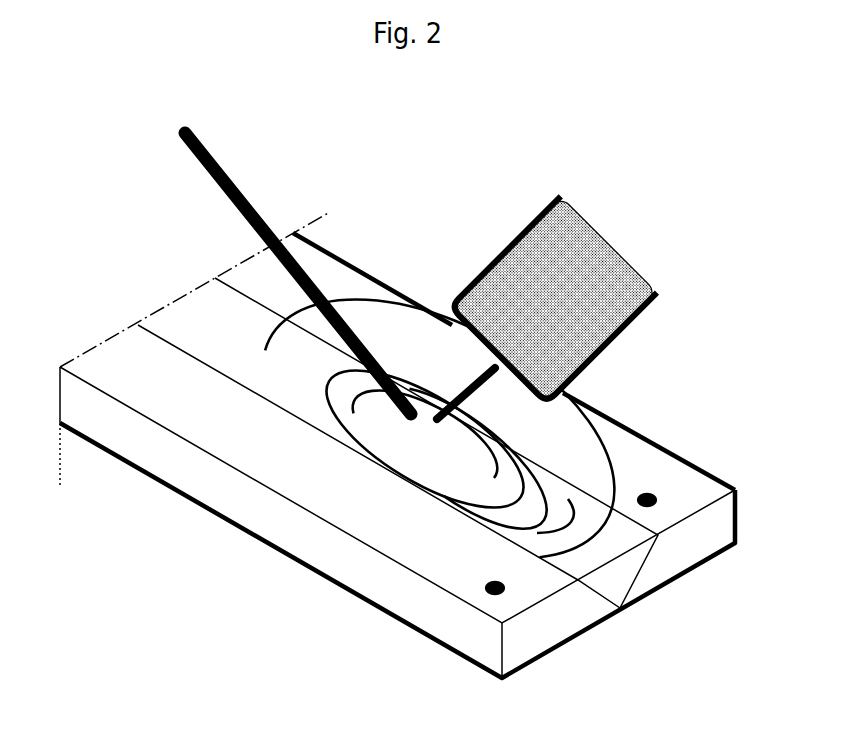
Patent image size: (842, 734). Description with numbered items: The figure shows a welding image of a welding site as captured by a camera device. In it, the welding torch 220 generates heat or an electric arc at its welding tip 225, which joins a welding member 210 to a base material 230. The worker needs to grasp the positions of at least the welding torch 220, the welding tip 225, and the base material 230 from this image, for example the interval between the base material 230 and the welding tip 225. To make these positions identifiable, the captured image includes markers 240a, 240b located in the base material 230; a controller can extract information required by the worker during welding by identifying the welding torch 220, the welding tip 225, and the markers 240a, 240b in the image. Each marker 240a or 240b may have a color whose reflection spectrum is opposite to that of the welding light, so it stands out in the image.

The welding member 210 is at (236, 180).
The welding torch 220 is at (543, 252).
The welding tip 225 is at (440, 408).
The base material 230 is at (290, 533).
The marker 240a is at (492, 590).
The marker 240b is at (655, 499).